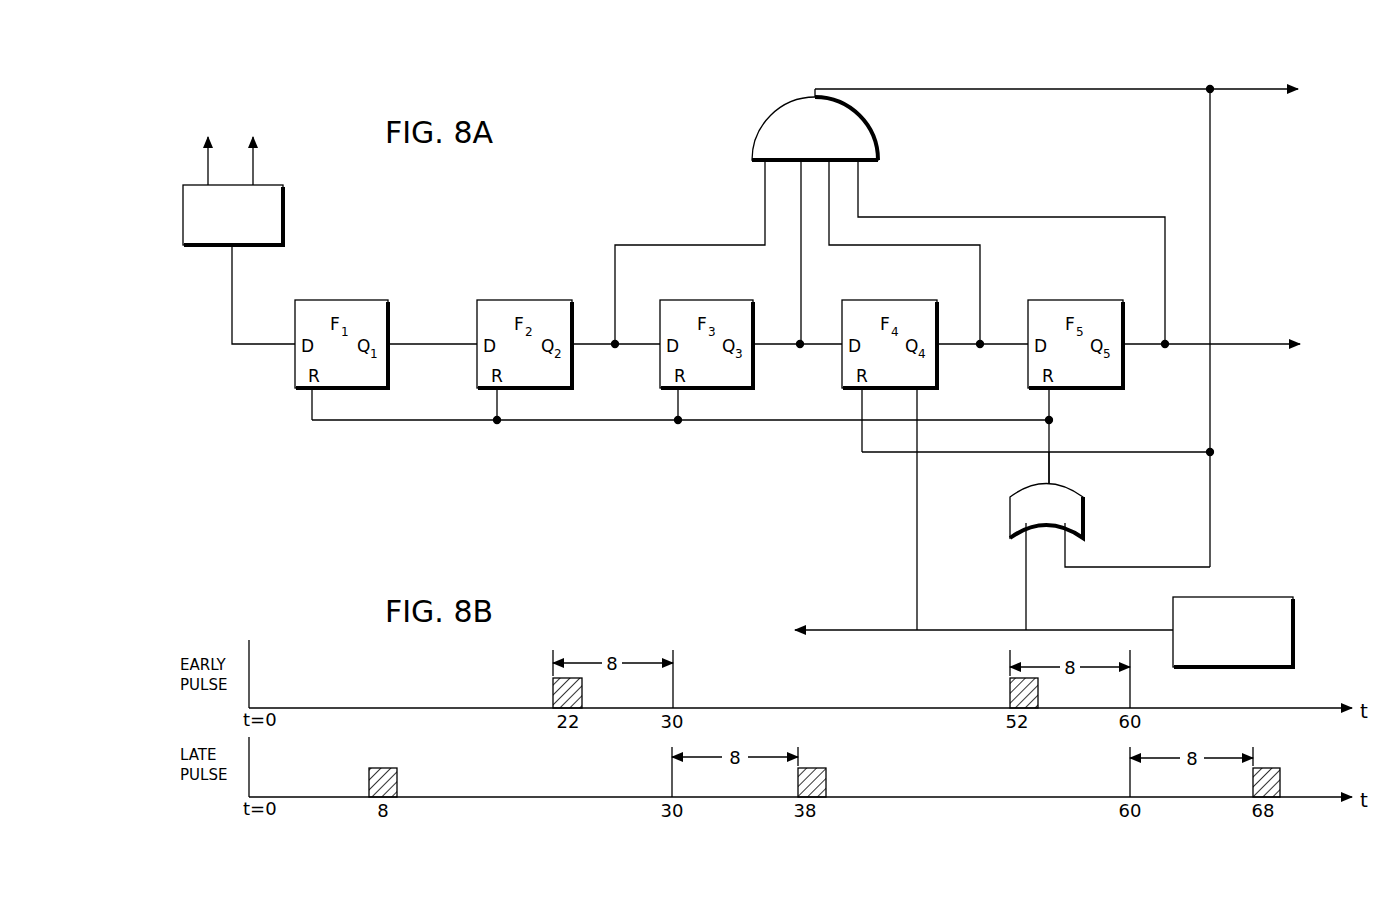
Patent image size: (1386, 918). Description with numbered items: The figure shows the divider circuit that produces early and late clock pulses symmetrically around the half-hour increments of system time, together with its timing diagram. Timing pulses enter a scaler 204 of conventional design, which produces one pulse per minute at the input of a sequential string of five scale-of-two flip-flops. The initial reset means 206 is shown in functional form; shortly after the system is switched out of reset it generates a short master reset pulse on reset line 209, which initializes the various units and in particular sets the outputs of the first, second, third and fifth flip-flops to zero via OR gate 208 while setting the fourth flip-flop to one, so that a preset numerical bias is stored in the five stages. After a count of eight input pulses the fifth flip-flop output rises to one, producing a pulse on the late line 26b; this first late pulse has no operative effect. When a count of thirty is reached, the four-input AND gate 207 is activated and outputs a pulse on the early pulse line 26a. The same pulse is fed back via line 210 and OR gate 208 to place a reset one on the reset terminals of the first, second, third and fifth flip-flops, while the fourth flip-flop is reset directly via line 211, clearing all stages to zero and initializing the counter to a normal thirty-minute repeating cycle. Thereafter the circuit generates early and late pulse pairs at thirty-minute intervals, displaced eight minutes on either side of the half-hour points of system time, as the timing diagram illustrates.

The scaler 204 is at (283, 216).
The AND gate 207 is at (876, 125).
The early pulse line 26a is at (1237, 91).
The late line 26b is at (1221, 344).
The reset line 211 is at (1094, 452).
The OR gate 208 is at (1083, 513).
The feedback line 210 is at (1210, 533).
The initial reset means 206 is at (1293, 641).
The reset line 209 is at (1075, 631).